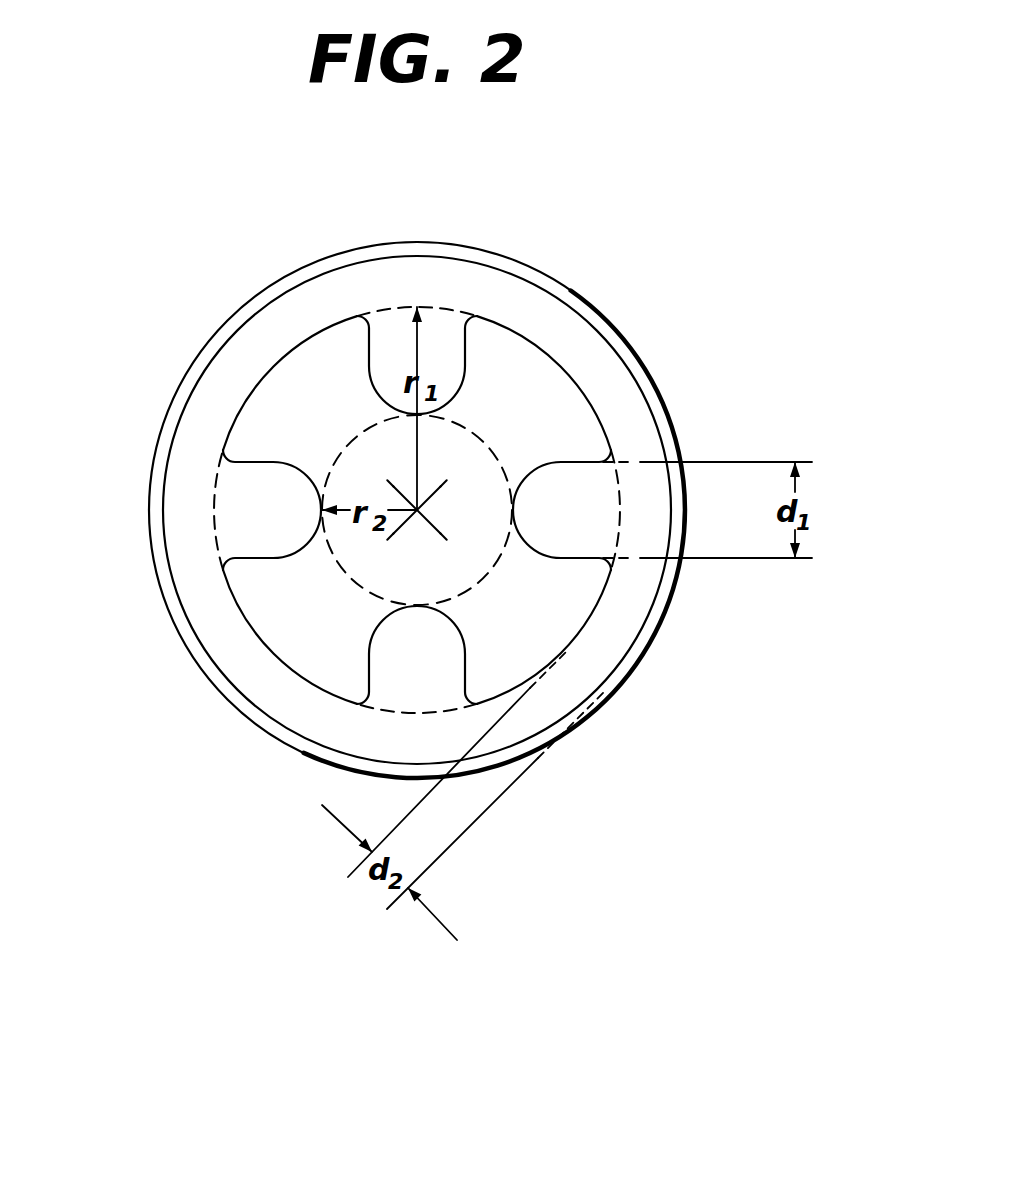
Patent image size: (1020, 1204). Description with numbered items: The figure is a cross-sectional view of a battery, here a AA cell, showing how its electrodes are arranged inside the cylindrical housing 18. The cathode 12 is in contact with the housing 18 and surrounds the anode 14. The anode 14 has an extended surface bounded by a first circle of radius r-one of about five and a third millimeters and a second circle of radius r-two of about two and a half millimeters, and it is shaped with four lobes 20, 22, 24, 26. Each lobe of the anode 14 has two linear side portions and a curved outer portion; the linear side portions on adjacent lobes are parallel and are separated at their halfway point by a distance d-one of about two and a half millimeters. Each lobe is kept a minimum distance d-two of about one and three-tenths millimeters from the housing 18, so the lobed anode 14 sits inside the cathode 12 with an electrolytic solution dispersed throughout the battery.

The cathode 12 is at (232, 360).
The anode 14 is at (480, 550).
The cylindrical housing 18 is at (647, 665).
The lobe 20 is at (308, 362).
The lobe 22 is at (295, 647).
The lobe 24 is at (540, 653).
The lobe 26 is at (535, 375).